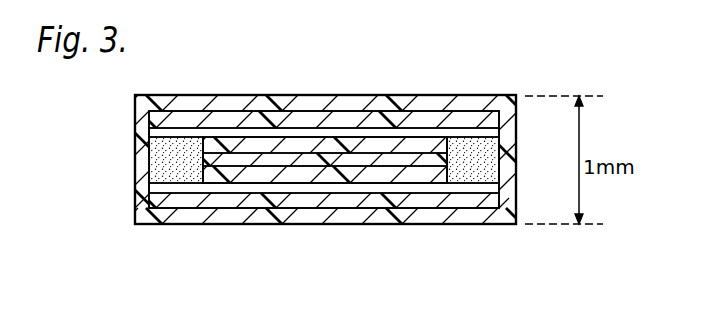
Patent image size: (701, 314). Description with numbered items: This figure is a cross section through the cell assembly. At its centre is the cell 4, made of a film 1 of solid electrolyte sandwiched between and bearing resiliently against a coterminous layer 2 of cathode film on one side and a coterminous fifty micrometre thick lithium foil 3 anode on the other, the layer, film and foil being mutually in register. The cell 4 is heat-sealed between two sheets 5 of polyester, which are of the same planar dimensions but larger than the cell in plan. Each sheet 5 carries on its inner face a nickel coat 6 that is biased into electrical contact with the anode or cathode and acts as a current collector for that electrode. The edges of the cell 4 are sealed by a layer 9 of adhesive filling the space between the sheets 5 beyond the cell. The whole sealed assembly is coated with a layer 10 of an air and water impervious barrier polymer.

The film of solid electrolyte 1 is at (237, 159).
The layer of cathode film 2 is at (258, 177).
The lithium foil anode 3 is at (275, 143).
The cell 4 is at (207, 50).
The sheets of polyester 5 is at (323, 117).
The nickel coat 6 is at (495, 190).
The layer of adhesive 9 is at (158, 172).
The layer of barrier polymer 10 is at (398, 100).